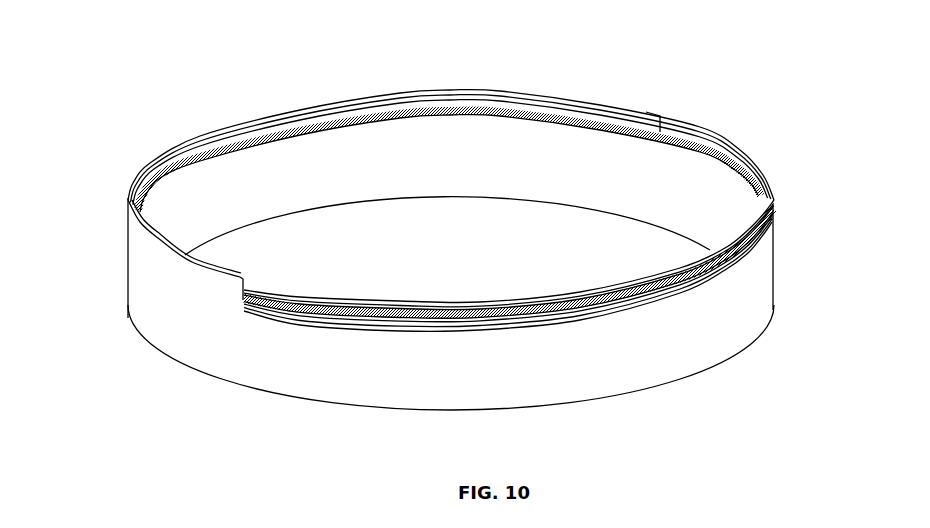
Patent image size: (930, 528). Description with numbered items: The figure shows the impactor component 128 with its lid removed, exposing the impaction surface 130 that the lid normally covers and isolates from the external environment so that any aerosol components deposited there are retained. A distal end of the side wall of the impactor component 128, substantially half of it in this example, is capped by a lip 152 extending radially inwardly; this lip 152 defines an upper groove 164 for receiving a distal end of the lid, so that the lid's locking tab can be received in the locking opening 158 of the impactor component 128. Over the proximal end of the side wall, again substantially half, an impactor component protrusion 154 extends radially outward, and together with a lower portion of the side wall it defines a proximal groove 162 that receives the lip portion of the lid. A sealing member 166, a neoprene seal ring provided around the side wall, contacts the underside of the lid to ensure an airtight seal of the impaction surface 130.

The impactor component 128 is at (157, 307).
The impaction surface 130 is at (482, 280).
The lip 152 is at (643, 112).
The impactor component protrusion 154 is at (260, 307).
The locking opening 158 is at (170, 137).
The proximal groove 162 is at (348, 327).
The upper groove 164 is at (672, 128).
The sealing member 166 is at (672, 276).